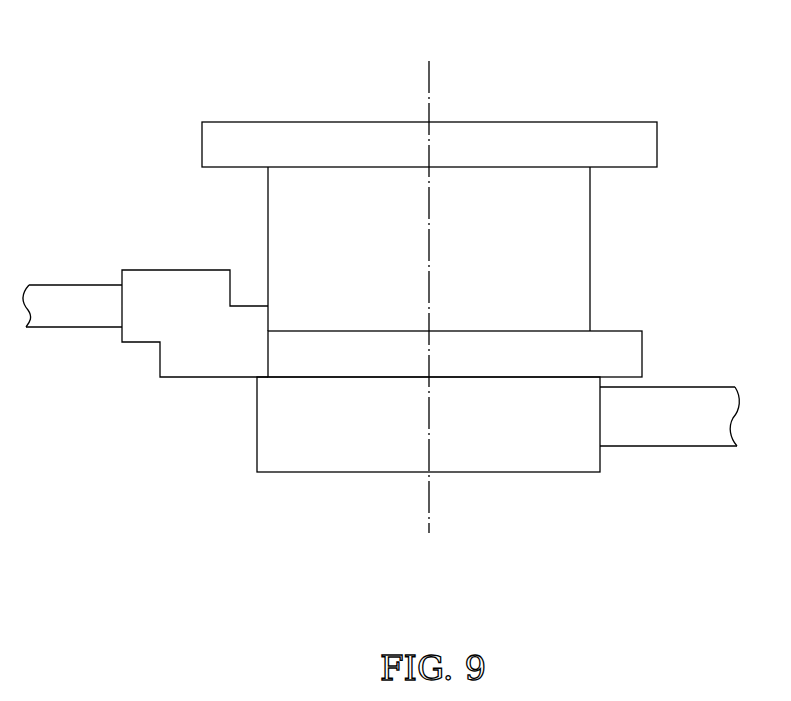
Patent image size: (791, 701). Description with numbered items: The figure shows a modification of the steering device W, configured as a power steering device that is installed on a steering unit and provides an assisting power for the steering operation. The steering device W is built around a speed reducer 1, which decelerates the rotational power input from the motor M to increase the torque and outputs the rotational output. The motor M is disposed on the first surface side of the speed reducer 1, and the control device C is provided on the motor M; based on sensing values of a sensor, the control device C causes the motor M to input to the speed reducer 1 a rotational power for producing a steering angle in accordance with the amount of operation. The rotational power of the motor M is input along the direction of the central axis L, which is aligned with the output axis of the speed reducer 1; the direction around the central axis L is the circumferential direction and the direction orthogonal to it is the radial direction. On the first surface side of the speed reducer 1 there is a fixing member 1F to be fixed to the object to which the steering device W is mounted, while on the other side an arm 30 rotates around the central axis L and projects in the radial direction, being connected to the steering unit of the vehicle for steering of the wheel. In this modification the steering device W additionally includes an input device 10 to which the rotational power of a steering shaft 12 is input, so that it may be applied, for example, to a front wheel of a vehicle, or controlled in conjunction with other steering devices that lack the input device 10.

The speed reducer 1 is at (236, 427).
The fixing member 1F is at (666, 351).
The input device 10 is at (147, 252).
The steering shaft 12 is at (55, 327).
The arm 30 is at (663, 446).
The control device C is at (684, 148).
The motor M is at (607, 262).
The central axis L is at (429, 319).
The steering device W is at (517, 520).